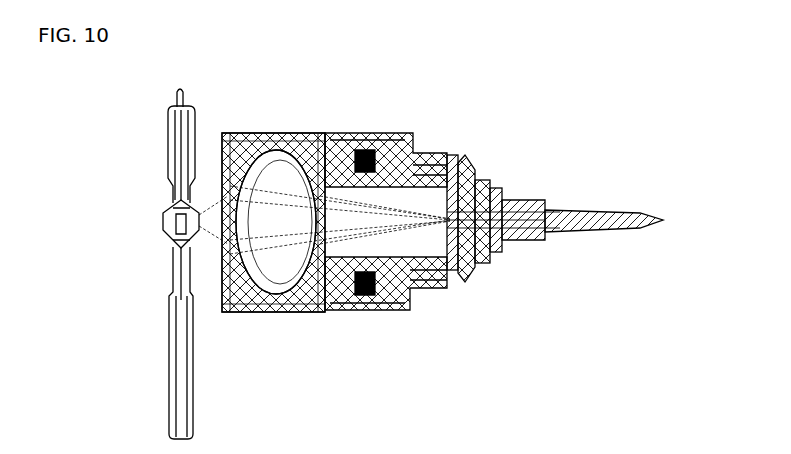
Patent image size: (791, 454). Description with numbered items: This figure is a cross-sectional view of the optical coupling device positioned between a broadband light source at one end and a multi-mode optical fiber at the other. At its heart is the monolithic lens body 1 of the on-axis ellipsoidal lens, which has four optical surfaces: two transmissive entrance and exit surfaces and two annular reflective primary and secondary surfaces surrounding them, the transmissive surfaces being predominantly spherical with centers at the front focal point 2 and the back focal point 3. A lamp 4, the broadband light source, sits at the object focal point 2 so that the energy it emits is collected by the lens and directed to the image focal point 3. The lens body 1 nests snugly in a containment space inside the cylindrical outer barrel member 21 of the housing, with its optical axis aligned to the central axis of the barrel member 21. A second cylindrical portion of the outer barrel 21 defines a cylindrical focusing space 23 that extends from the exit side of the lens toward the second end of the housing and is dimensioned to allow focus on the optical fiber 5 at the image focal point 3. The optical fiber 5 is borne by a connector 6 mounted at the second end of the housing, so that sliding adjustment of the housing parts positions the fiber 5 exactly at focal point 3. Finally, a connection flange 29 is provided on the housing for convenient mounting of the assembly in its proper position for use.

The lens body 1 is at (268, 133).
The front focal point 2 is at (178, 230).
The back focal point 3 is at (498, 245).
The lamp 4 is at (167, 198).
The optical fiber 5 is at (488, 186).
The connector 6 is at (604, 178).
The cylindrical outer barrel member 21 is at (400, 303).
The focusing space 23 is at (465, 155).
The connection flange 29 is at (288, 316).